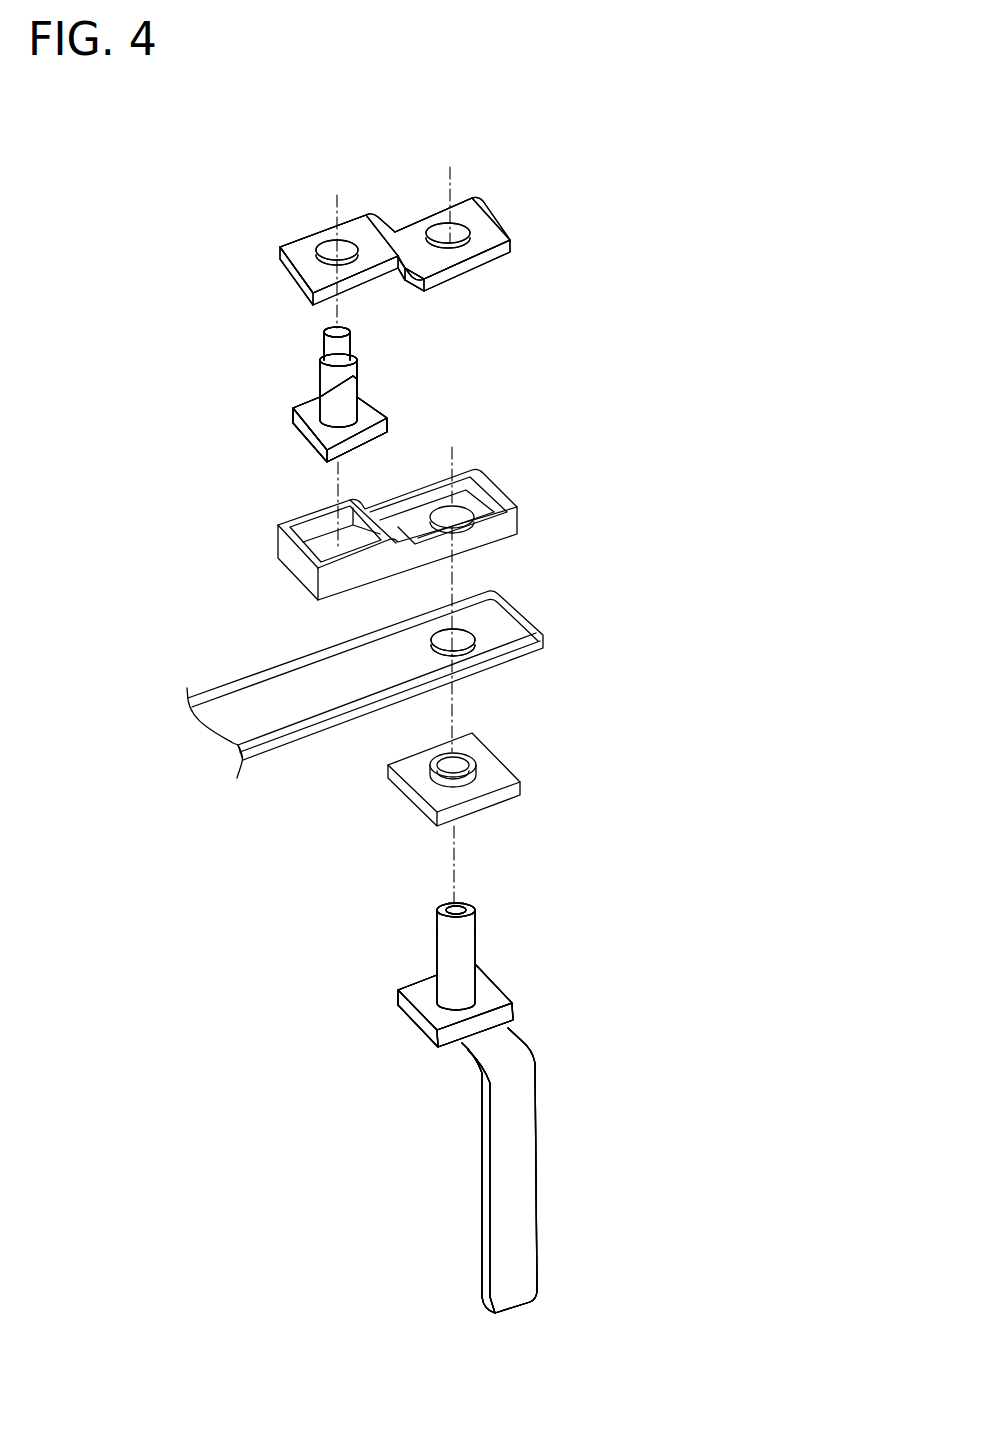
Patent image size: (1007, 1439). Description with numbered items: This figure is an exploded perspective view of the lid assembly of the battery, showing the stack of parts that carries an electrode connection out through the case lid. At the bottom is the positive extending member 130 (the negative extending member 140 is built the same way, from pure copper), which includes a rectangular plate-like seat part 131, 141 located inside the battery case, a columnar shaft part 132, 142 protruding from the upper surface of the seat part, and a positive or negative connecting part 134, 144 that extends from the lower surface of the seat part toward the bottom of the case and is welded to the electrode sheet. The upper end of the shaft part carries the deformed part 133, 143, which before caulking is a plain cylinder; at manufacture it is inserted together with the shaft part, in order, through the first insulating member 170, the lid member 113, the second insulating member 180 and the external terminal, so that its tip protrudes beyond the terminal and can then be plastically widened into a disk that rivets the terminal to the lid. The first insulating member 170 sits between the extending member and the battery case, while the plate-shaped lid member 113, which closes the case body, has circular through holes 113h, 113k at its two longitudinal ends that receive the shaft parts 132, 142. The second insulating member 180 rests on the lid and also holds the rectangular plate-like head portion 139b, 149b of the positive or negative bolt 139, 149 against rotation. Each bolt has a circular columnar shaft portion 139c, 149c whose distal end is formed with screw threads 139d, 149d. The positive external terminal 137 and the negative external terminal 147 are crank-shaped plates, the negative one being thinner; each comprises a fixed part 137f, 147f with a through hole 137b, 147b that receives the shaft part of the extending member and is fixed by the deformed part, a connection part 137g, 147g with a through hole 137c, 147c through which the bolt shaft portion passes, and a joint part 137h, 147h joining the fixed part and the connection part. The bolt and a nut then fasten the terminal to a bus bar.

The positive external terminal 137 is at (490, 207).
The negative external terminal 147 is at (467, 220).
The through hole 137b is at (457, 202).
The through hole 147b is at (509, 166).
The through hole 137c is at (330, 236).
The through hole 147c is at (277, 202).
The connection part 137g is at (292, 249).
The connection part 147g is at (261, 246).
The fixed part 137f is at (485, 260).
The fixed part 147f is at (541, 238).
The joint part 137h is at (402, 275).
The joint part 147h is at (509, 290).
The positive bolt 139 is at (288, 420).
The negative bolt 149 is at (262, 394).
The screw threads 139d is at (318, 347).
The screw threads 149d is at (239, 338).
The shaft portion 139c is at (318, 392).
The shaft portion 149c is at (239, 393).
The head portion 139b is at (365, 410).
The head portion 149b is at (415, 409).
The second insulating member 180 is at (492, 482).
The lid member 113 is at (406, 666).
The through hole 113h is at (468, 630).
The through hole 113k is at (540, 605).
The first insulating member 170 is at (500, 757).
The positive extending member 130 is at (542, 1126).
The negative extending member 140 is at (554, 1108).
The positive deformed part 133 is at (450, 928).
The negative deformed part 143 is at (370, 903).
The shaft part 132 is at (447, 963).
The shaft part 142 is at (370, 970).
The seat part 131 is at (433, 1008).
The seat part 141 is at (389, 1006).
The positive connecting part 134 is at (518, 1242).
The negative connecting part 144 is at (589, 1170).